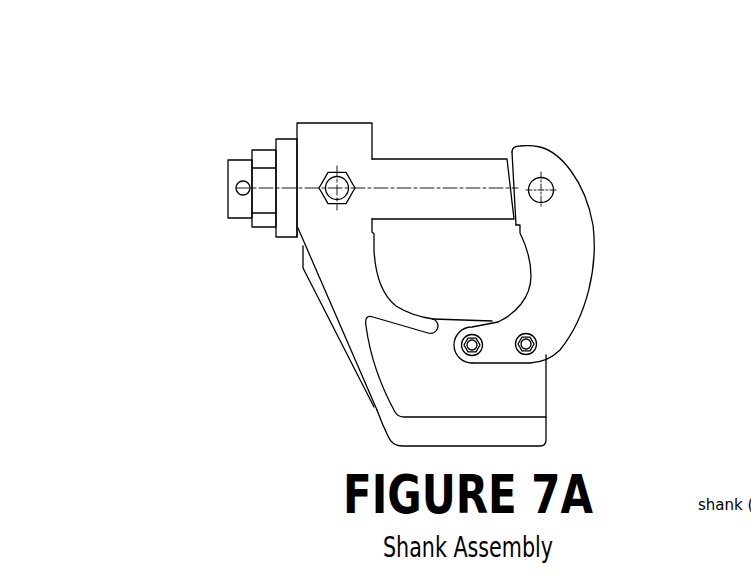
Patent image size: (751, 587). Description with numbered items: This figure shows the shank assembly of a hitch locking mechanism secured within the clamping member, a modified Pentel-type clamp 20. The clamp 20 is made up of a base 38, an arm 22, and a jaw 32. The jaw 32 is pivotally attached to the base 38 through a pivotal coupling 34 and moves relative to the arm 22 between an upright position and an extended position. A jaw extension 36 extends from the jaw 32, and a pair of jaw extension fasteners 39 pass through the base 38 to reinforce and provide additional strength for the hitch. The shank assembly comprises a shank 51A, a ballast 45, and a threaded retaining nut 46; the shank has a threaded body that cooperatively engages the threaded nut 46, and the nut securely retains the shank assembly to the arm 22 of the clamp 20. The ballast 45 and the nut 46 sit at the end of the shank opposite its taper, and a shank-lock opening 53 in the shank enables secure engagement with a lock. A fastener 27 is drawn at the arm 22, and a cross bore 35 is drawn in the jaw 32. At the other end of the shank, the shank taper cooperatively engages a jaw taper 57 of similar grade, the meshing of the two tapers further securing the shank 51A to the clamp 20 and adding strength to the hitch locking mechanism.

The clamp 20 is at (357, 290).
The arm 22 is at (357, 320).
The fastener 27 is at (332, 208).
The jaw 32 is at (592, 236).
The pivotal coupling 34 is at (537, 335).
The cross bore 35 is at (548, 178).
The jaw extension 36 is at (500, 358).
The base 38 is at (417, 403).
The jaw extension fastener 39 is at (475, 356).
The ballast 45 is at (287, 225).
The threaded retaining nut 46 is at (262, 158).
The shank 51A is at (176, 163).
The shank-lock opening 53 is at (250, 186).
The jaw taper 57 is at (515, 150).